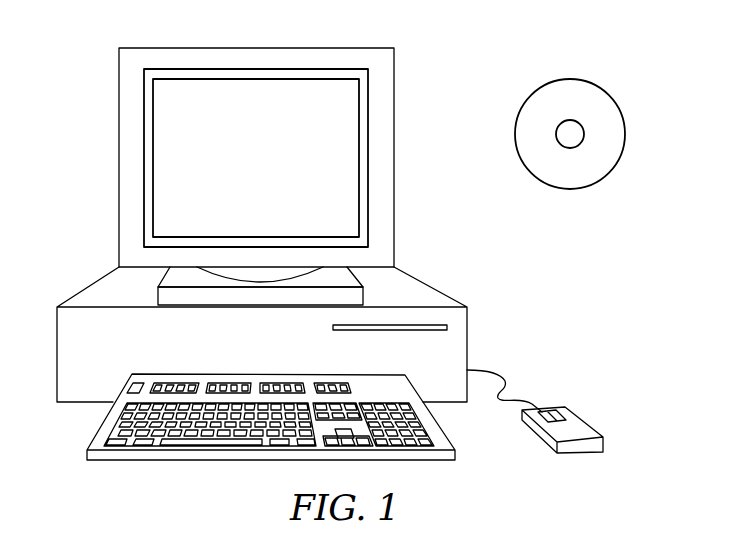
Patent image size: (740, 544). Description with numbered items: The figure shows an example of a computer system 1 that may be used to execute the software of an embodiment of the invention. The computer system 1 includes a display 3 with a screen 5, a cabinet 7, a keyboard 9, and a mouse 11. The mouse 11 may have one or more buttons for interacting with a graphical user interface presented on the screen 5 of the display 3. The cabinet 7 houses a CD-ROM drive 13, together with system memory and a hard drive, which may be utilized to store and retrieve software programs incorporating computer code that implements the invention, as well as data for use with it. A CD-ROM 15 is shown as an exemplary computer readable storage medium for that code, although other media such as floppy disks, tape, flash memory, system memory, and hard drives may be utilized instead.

The computer system 1 is at (464, 63).
The display 3 is at (119, 178).
The screen 5 is at (165, 117).
The cabinet 7 is at (57, 347).
The keyboard 9 is at (125, 462).
The mouse 11 is at (568, 410).
The CD-ROM drive 13 is at (440, 328).
The CD-ROM 15 is at (608, 93).